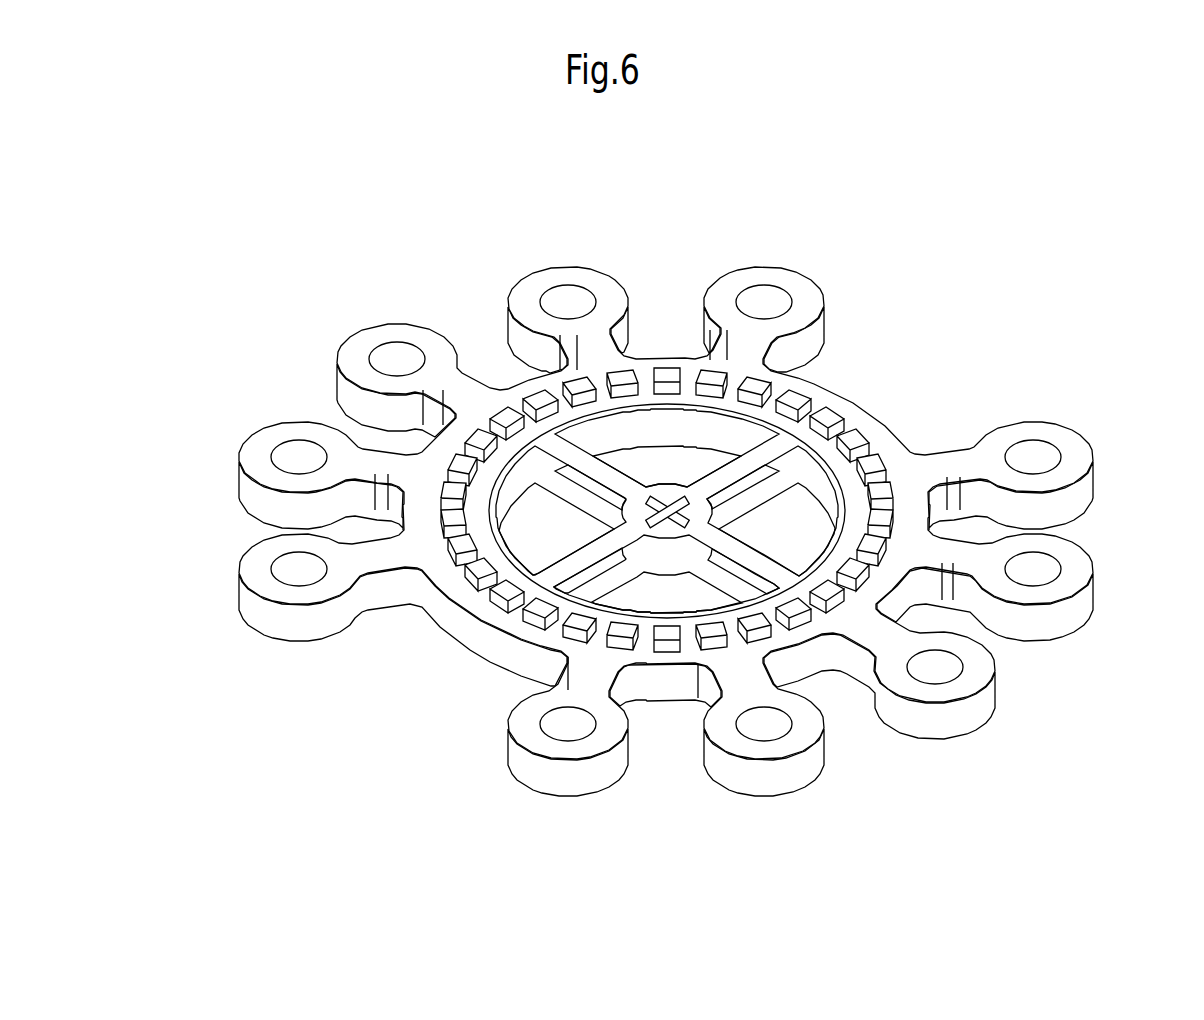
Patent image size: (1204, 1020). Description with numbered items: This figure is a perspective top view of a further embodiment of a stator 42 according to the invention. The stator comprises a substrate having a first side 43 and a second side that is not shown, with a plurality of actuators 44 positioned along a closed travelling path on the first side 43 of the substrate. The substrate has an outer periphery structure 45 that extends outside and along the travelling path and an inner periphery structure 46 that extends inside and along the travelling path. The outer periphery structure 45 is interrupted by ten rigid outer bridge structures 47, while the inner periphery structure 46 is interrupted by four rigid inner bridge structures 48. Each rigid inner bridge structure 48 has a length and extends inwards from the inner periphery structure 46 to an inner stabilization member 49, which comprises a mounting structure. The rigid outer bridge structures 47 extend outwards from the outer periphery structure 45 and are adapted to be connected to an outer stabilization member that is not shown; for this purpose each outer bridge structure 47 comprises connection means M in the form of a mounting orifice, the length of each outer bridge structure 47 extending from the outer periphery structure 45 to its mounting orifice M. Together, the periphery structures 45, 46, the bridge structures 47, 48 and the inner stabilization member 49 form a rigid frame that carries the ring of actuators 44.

The rotor assembly 42 is at (655, 532).
The first side 43 is at (887, 572).
The actuators 44 is at (663, 632).
The outer periphery structure 45 is at (457, 607).
The inner periphery structure 46 is at (825, 462).
The rigid outer bridge structures 47 is at (865, 632).
The rigid inner bridge structures 48 is at (722, 462).
The inner stabilization member 49 is at (637, 520).
The connection means M is at (297, 566).